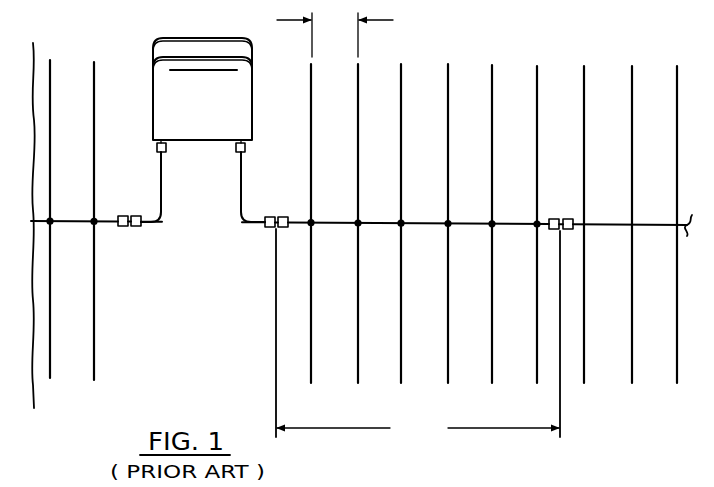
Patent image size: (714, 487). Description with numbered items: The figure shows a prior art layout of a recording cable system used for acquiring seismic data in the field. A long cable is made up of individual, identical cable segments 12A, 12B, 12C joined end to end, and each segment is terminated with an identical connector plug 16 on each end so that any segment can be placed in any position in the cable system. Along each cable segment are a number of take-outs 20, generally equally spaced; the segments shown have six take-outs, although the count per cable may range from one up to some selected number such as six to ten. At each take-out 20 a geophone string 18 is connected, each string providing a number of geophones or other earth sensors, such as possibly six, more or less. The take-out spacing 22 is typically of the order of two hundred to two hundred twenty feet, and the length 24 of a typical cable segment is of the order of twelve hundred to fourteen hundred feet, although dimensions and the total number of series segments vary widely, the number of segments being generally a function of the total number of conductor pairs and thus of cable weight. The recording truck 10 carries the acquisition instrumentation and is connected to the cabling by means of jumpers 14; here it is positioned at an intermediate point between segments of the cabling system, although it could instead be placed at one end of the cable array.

The recording truck 10 is at (252, 112).
The cable segment 12A is at (78, 228).
The cable segment 12B is at (380, 229).
The cable segment 12C is at (607, 230).
The jumpers 14 is at (242, 178).
The connector plug 16 is at (137, 216).
The geophone strings 18 is at (402, 126).
The take-outs 20 is at (536, 223).
The take-out spacing 22 is at (334, 34).
The cable segment length 24 is at (367, 428).